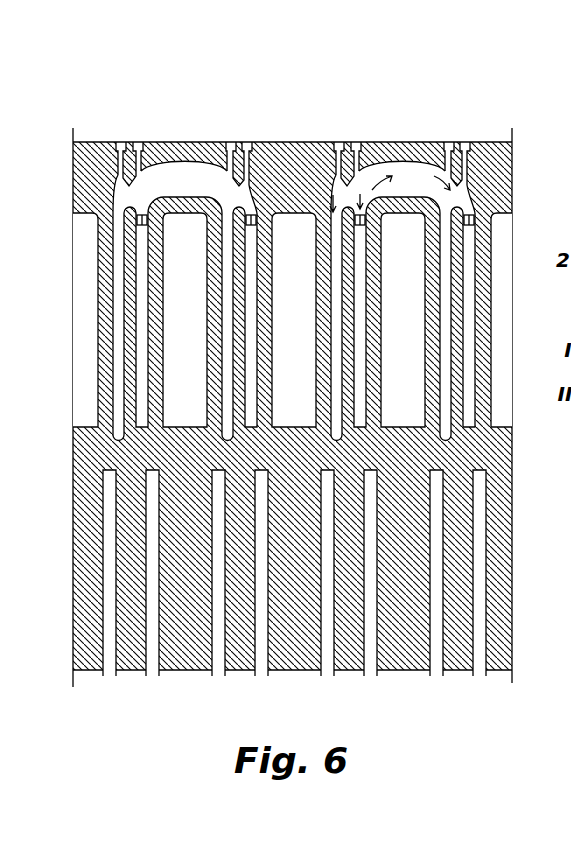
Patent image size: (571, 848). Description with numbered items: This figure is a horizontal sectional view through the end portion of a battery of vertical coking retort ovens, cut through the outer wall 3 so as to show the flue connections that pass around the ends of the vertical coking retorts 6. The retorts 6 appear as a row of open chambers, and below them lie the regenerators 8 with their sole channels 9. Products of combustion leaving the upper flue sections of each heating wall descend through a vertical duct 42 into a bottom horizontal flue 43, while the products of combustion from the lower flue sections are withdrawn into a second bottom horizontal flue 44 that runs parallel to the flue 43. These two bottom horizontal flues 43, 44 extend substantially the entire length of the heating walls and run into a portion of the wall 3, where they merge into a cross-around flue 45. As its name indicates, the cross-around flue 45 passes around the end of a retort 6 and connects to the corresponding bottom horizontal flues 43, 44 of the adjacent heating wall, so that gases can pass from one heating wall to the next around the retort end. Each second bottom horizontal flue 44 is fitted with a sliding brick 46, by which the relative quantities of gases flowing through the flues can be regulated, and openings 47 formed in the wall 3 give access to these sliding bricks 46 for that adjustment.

The outer wall 3 is at (297, 150).
The vertical coking retort 6 is at (502, 305).
The regenerator 8 is at (565, 583).
The sole channel 9 is at (157, 658).
The vertical duct 42 is at (556, 426).
The bottom horizontal flue 43 is at (447, 372).
The second bottom horizontal flue 44 is at (472, 392).
The cross-around flue 45 is at (396, 178).
The sliding brick 46 is at (471, 216).
The opening 47 is at (466, 144).